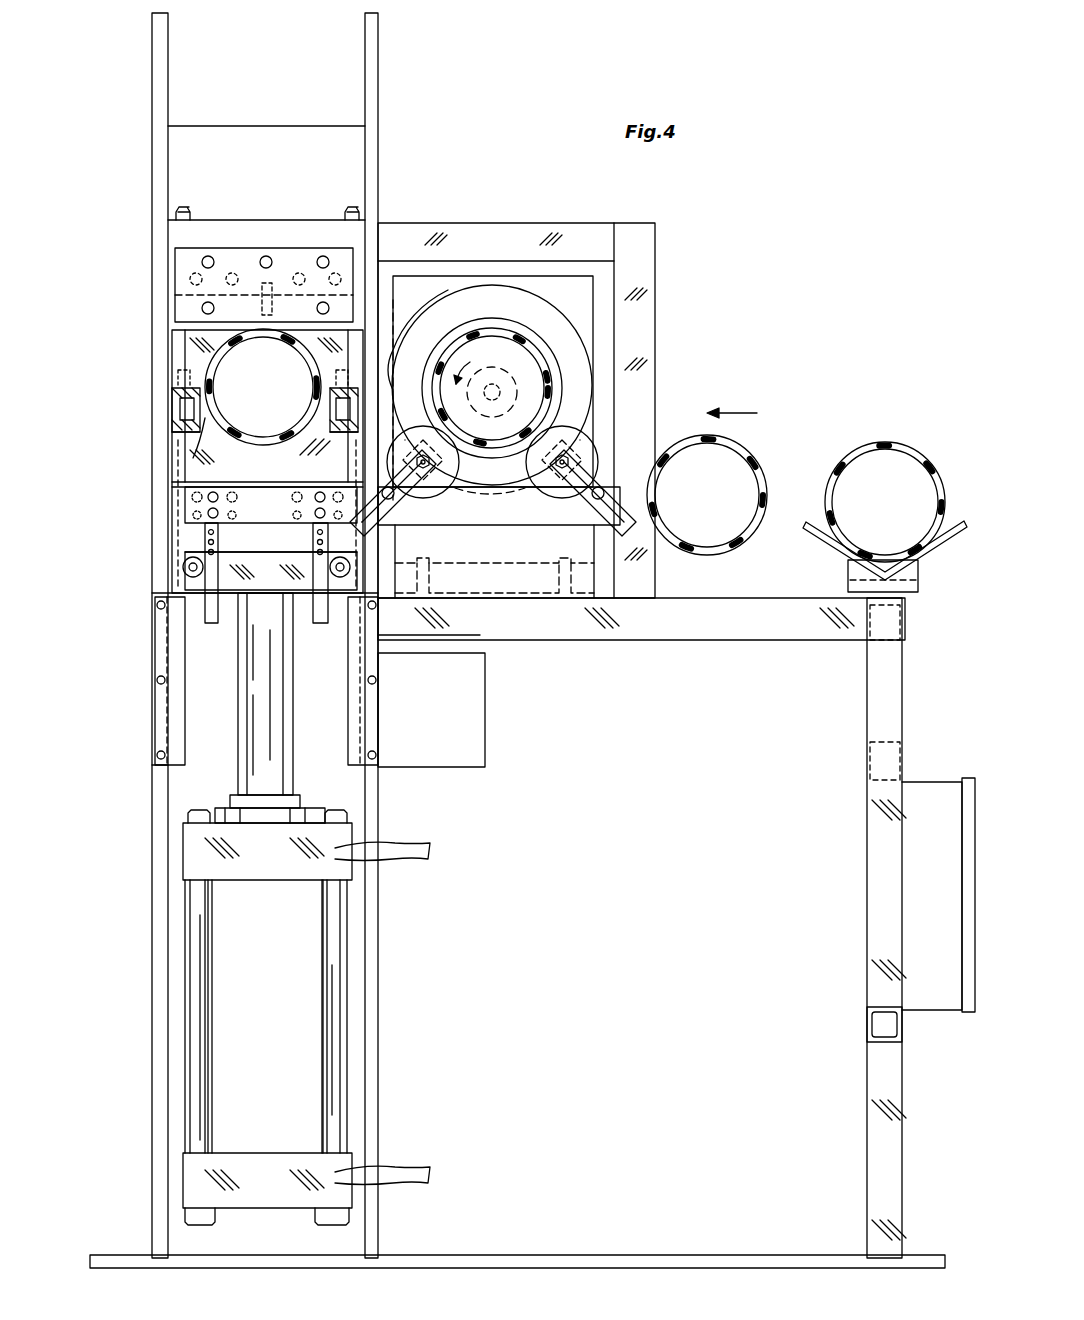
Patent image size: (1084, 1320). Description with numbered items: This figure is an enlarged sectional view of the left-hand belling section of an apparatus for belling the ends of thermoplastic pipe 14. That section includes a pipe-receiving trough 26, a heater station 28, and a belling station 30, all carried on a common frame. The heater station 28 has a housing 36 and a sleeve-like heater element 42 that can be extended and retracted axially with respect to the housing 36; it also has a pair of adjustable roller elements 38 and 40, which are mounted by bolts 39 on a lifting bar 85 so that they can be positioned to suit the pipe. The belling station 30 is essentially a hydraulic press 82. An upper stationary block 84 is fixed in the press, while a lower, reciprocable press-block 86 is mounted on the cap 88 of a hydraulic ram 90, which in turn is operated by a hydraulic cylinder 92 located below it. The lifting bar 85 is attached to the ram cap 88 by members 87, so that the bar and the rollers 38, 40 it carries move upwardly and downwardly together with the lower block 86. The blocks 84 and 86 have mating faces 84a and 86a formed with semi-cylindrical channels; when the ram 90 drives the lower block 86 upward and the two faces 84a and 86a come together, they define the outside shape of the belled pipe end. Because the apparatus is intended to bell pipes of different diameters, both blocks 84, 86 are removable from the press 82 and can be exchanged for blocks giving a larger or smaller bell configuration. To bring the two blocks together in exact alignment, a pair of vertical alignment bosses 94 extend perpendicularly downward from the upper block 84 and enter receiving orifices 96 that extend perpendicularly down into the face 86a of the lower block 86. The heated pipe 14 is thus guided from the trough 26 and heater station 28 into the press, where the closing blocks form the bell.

The pipe 14 is at (745, 442).
The pipe-receiving trough 26 is at (935, 543).
The heater station 28 is at (557, 292).
The belling station 30 is at (320, 335).
The housing 36 is at (644, 251).
The adjustable roller element 38 is at (450, 515).
The bolts 39 is at (402, 505).
The adjustable roller element 40 is at (526, 478).
The sleeve-like heater element 42 is at (492, 288).
The hydraulic press 82 is at (184, 448).
The upper stationary block 84 is at (232, 228).
The mating face 84a is at (353, 378).
The lifting bar 85 is at (498, 516).
The lower reciprocable press-block 86 is at (227, 476).
The mating face 86a is at (212, 382).
The members 87 is at (212, 623).
The cap 88 is at (256, 554).
The hydraulic ram 90 is at (284, 709).
The hydraulic cylinder 92 is at (302, 974).
The vertical alignment bosses 94 is at (198, 400).
The receiving orifices 96 is at (201, 429).